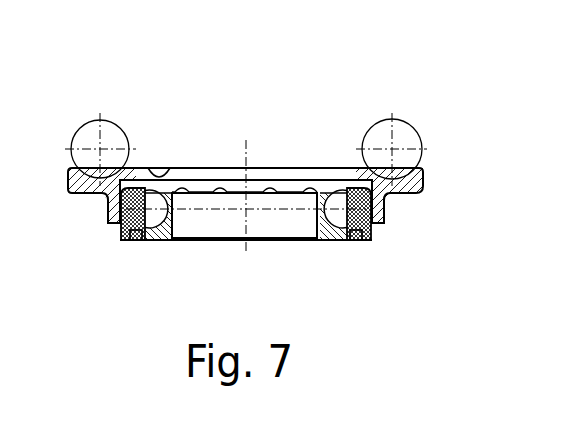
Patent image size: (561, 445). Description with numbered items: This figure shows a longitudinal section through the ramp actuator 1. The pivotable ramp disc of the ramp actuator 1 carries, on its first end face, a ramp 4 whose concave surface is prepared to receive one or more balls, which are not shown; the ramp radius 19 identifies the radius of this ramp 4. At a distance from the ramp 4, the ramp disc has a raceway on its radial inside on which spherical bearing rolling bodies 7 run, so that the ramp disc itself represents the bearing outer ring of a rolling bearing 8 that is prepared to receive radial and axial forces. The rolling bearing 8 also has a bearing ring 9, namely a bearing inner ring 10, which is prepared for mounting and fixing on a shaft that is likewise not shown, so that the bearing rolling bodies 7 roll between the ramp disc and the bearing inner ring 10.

The ramp actuator 1 is at (362, 129).
The ramp 4 is at (92, 162).
The bearing rolling bodies 7 is at (135, 243).
The rolling bearing 8 is at (180, 246).
The bearing ring 9 is at (167, 242).
The bearing inner ring 10 is at (246, 285).
The ramp radius 19 is at (187, 127).